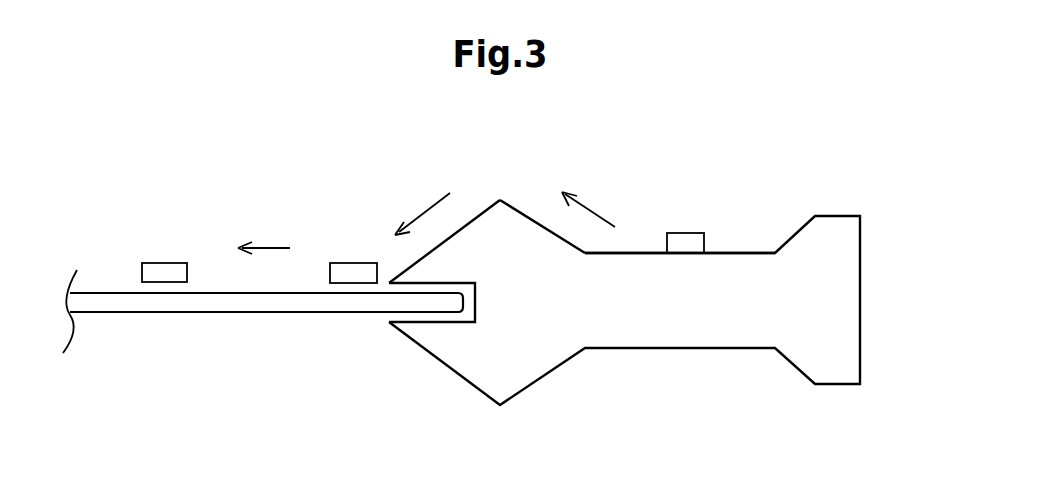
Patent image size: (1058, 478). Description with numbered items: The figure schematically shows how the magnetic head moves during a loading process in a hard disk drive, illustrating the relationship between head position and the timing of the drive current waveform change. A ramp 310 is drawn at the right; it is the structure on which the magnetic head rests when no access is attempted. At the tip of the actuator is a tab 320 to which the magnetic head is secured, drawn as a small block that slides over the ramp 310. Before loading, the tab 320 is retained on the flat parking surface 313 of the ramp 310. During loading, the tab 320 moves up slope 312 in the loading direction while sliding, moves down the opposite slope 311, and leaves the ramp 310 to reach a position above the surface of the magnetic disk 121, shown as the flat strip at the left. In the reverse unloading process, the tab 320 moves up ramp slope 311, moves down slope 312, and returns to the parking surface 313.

The ramp 310 is at (853, 300).
The ramp slope 311 is at (487, 207).
The slope 312 is at (523, 212).
The parking surface 313 is at (732, 253).
The tab 320 is at (175, 268).
The magnetic disk 121 is at (272, 307).